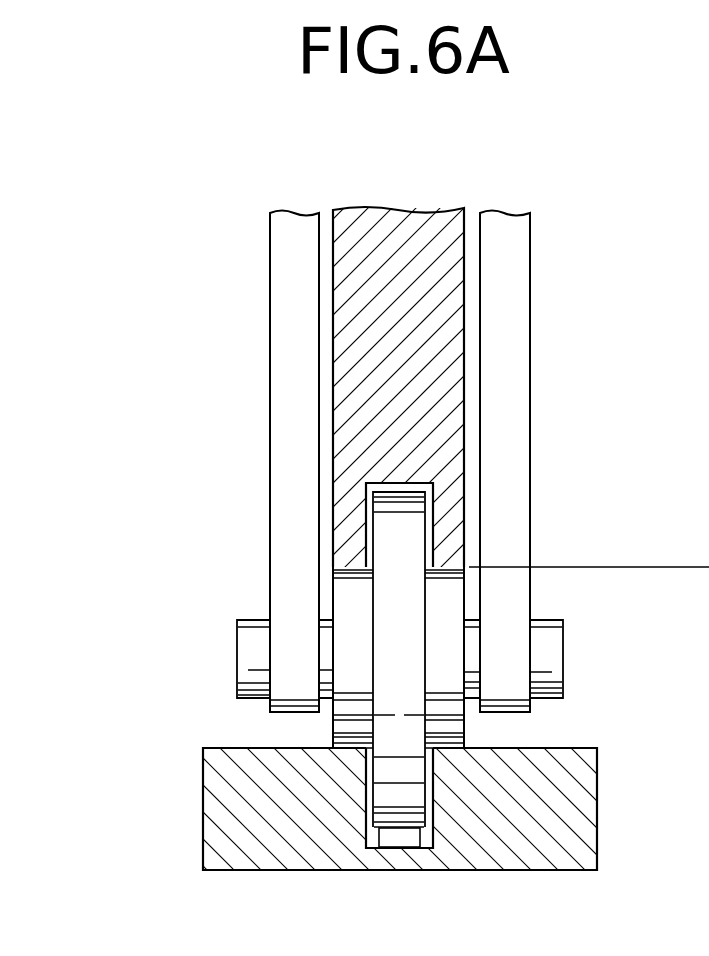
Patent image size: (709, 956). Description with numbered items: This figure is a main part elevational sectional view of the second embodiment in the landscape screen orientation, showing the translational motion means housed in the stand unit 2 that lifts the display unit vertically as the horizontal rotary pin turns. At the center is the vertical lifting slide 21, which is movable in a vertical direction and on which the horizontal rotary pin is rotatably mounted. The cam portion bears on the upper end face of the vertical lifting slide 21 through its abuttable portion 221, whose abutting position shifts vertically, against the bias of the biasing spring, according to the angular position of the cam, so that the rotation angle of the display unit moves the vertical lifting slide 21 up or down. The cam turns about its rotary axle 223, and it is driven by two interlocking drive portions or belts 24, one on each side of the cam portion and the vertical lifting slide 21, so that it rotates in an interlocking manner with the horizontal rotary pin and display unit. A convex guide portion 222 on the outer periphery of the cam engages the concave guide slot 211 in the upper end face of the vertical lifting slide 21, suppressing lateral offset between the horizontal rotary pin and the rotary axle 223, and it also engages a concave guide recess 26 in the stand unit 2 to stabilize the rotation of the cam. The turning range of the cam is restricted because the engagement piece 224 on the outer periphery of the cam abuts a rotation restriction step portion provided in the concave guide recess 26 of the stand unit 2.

The stand unit 2 is at (598, 790).
The vertical lifting slide 21 is at (400, 222).
The interlocking drive portion 24 is at (281, 296).
The concave guide recess 26 is at (425, 843).
The concave guide slot 211 is at (427, 509).
The abuttable portion 221 is at (343, 585).
The convex guide portion 222 is at (383, 727).
The rotary axle 223 is at (551, 658).
The engagement piece 224 is at (390, 834).